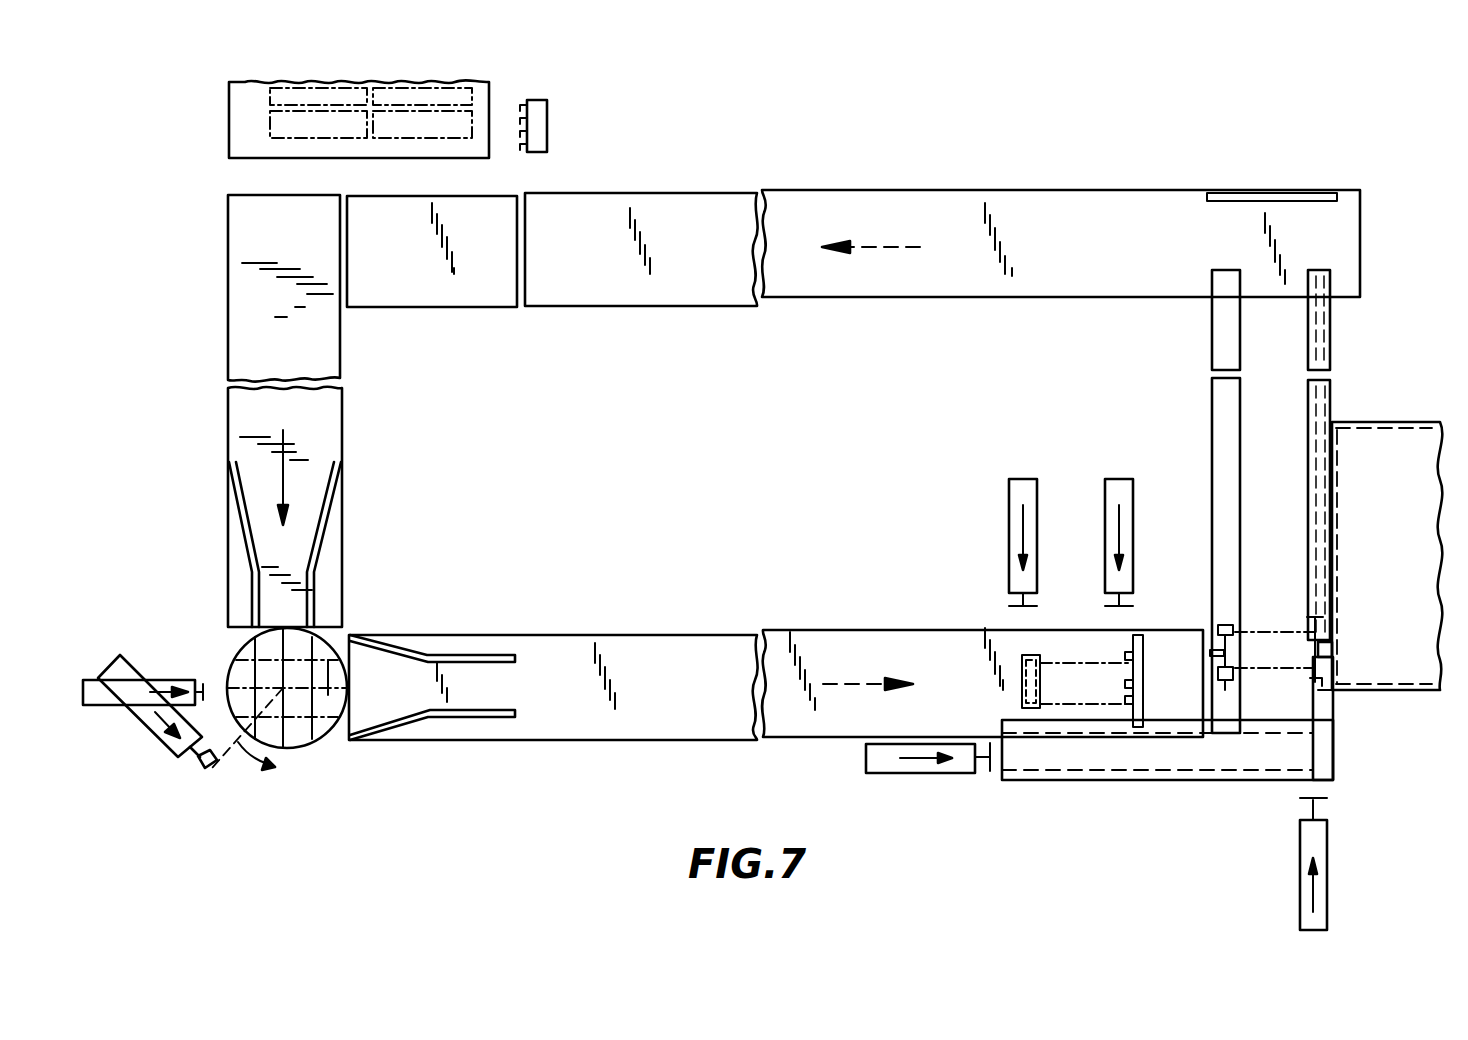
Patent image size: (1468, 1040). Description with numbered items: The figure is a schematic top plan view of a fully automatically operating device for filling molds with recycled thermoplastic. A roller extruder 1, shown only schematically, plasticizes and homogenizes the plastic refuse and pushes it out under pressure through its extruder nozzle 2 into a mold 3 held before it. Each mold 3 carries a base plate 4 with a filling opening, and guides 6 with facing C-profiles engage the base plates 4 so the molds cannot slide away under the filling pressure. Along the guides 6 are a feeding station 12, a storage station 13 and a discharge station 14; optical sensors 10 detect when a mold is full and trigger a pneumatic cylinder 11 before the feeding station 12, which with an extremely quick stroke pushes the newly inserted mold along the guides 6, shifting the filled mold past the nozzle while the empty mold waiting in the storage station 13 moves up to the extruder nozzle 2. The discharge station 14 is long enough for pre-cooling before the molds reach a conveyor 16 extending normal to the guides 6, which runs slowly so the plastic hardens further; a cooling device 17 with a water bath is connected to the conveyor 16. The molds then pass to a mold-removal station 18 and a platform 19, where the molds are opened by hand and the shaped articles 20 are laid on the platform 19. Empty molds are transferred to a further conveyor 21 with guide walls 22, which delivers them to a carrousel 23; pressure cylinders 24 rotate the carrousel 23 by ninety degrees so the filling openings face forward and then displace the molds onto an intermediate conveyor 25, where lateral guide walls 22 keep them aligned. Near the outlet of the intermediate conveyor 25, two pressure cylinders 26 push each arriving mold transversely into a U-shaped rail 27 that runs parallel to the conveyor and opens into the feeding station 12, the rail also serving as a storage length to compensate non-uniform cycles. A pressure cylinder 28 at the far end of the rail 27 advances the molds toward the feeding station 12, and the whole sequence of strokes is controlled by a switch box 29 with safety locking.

The roller extruder 1 is at (1403, 560).
The extruder nozzle 2 is at (1334, 650).
The mold 3 is at (1260, 648).
The base plate 4 is at (1316, 682).
The guides 6 is at (1309, 346).
The optical sensors 10 is at (1218, 638).
The pneumatic cylinder 11 is at (1328, 832).
The feeding station 12 is at (1300, 745).
The storage station 13 is at (1318, 708).
The discharge station 14 is at (1292, 283).
The conveyor 16 is at (1162, 205).
The cooling device 17 is at (446, 308).
The mold-removal station 18 is at (352, 196).
The platform 19 is at (236, 128).
The shaped articles 20 is at (462, 125).
The further conveyor 21 is at (242, 275).
The guide walls 22 is at (430, 726).
The carrousel 23 is at (325, 745).
The pressure cylinders 24 is at (184, 676).
The intermediate conveyor 25 is at (555, 646).
The pressure cylinders 26 is at (1105, 507).
The U-shaped rail 27 is at (1172, 768).
The pressure cylinder 28 is at (900, 776).
The switch box 29 is at (548, 127).